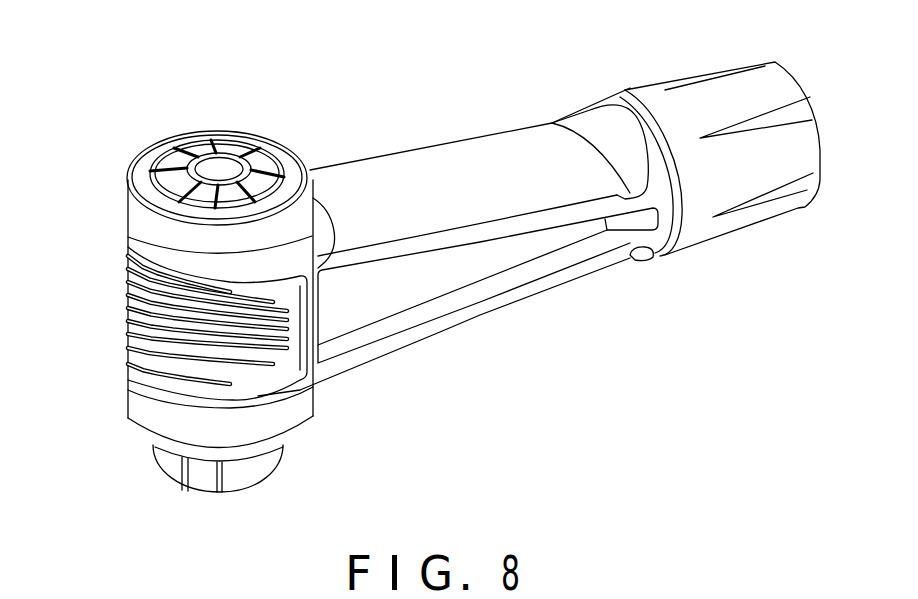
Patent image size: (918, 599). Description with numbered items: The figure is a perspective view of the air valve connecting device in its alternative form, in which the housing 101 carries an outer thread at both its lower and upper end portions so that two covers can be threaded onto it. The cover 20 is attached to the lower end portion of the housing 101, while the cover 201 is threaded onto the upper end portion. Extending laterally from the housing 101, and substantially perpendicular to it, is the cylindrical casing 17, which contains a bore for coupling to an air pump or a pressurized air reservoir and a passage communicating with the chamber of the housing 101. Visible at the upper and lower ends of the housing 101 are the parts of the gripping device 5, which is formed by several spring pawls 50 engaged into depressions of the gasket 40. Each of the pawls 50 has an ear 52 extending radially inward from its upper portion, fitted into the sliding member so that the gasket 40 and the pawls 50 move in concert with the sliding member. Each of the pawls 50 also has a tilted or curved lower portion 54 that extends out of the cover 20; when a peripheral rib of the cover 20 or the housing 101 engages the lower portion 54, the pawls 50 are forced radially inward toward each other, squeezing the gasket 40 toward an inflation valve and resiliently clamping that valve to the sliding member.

The gripping device 5 is at (186, 114).
The cylindrical casing 17 is at (458, 175).
The cover 20 is at (130, 400).
The cover 201 is at (136, 223).
The housing 101 is at (130, 318).
The ear 52 is at (152, 182).
The pawls 50 is at (257, 170).
The gasket 40 is at (199, 478).
The lower portion 54 is at (243, 480).